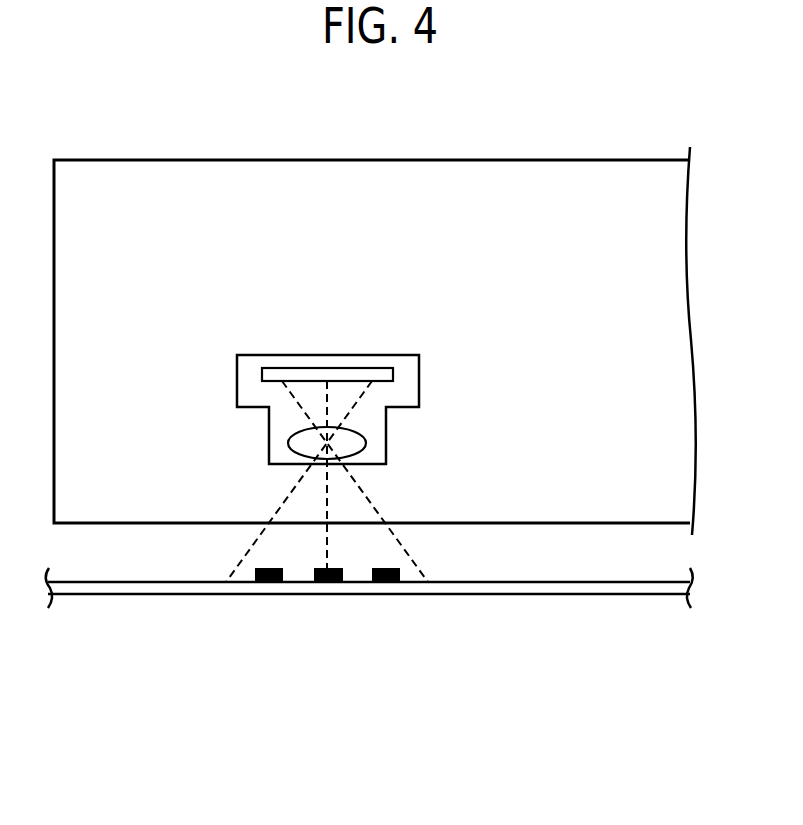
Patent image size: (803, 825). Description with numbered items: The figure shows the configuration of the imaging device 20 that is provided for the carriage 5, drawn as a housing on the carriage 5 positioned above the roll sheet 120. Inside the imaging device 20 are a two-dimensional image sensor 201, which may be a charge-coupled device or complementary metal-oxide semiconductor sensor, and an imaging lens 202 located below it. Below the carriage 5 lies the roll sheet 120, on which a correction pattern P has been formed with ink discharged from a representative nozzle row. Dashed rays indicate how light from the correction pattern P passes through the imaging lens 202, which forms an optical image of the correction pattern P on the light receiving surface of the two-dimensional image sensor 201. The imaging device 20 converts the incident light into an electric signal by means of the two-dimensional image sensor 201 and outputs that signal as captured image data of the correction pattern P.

The carriage 5 is at (600, 160).
The imaging device 20 is at (452, 372).
The two-dimensional image sensor 201 is at (355, 368).
The imaging lens 202 is at (366, 443).
The correction pattern P is at (383, 548).
The roll sheet 120 is at (586, 595).